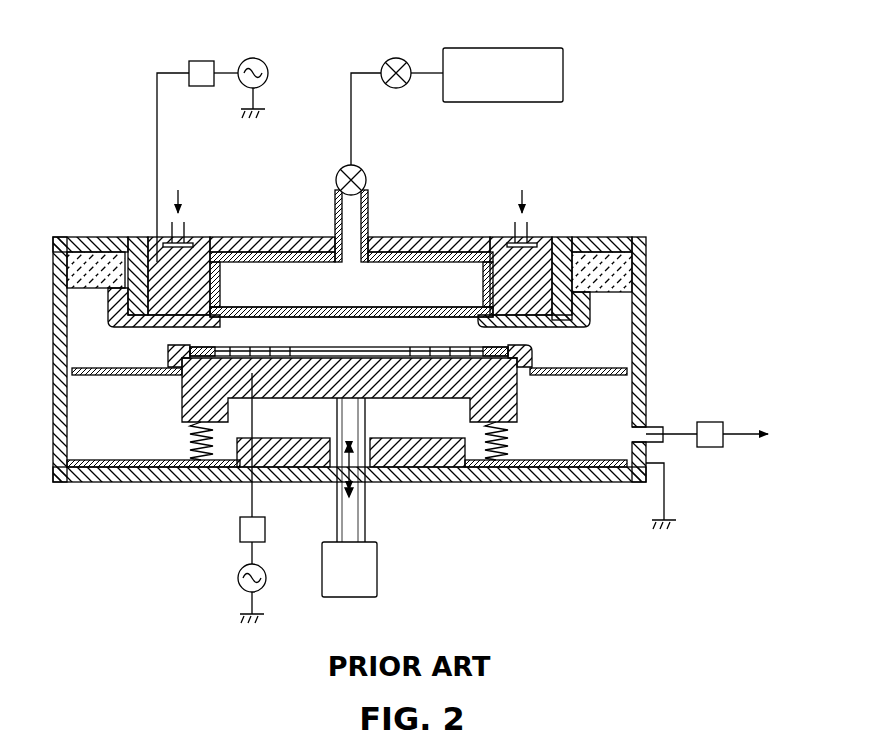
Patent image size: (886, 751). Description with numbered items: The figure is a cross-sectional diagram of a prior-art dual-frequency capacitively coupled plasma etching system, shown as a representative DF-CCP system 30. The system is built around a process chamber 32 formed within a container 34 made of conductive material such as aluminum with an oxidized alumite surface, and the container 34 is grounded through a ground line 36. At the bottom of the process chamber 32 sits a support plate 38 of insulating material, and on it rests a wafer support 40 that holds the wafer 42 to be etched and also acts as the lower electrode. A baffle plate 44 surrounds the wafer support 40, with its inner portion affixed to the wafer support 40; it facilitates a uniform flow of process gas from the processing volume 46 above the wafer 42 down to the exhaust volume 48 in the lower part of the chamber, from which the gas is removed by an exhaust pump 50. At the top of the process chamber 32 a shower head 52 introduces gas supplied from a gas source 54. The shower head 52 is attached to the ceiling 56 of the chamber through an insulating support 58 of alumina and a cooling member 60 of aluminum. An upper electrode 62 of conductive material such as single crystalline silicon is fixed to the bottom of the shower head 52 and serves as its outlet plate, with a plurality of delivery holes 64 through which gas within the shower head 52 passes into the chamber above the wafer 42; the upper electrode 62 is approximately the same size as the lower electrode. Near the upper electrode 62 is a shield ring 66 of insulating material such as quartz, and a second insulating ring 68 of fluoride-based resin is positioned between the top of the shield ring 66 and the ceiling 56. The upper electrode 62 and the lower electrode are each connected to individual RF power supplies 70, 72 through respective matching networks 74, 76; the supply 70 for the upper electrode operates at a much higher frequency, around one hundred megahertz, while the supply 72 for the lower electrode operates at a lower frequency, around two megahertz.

The DF-CCP system 30 is at (660, 128).
The process chamber 32 is at (104, 353).
The container 34 is at (645, 310).
The ground line 36 is at (666, 496).
The support plate 38 is at (100, 461).
The wafer support 40 is at (517, 400).
The wafer 42 is at (436, 347).
The baffle plate 44 is at (145, 376).
The processing volume 46 is at (351, 331).
The exhaust volume 48 is at (574, 418).
The exhaust pump 50 is at (707, 421).
The shower head 52 is at (245, 254).
The gas source 54 is at (545, 48).
The ceiling 56 is at (642, 219).
The insulating support 58 is at (563, 243).
The cooling member 60 is at (428, 238).
The upper electrode 62 is at (268, 307).
The delivery holes 64 is at (383, 307).
The shield ring 66 is at (562, 322).
The second insulating ring 68 is at (608, 246).
The RF power supply 70 is at (256, 60).
The RF power supply 72 is at (238, 578).
The matching network 74 is at (200, 61).
The matching network 76 is at (240, 529).